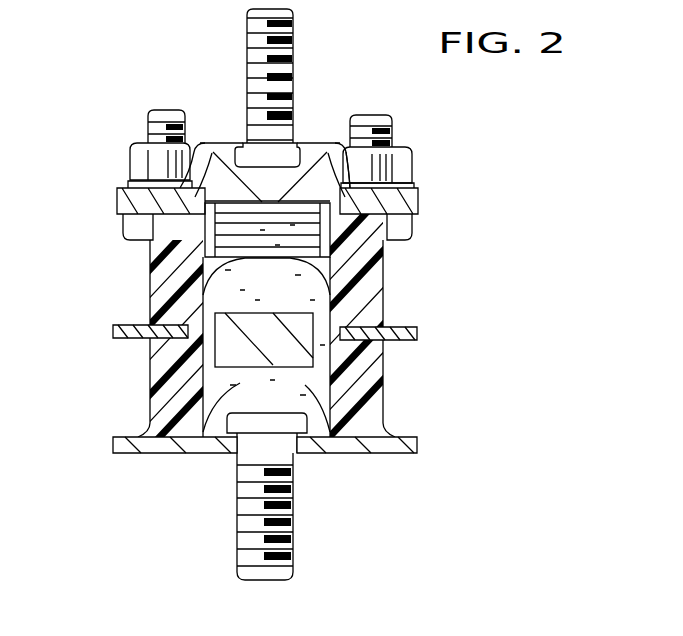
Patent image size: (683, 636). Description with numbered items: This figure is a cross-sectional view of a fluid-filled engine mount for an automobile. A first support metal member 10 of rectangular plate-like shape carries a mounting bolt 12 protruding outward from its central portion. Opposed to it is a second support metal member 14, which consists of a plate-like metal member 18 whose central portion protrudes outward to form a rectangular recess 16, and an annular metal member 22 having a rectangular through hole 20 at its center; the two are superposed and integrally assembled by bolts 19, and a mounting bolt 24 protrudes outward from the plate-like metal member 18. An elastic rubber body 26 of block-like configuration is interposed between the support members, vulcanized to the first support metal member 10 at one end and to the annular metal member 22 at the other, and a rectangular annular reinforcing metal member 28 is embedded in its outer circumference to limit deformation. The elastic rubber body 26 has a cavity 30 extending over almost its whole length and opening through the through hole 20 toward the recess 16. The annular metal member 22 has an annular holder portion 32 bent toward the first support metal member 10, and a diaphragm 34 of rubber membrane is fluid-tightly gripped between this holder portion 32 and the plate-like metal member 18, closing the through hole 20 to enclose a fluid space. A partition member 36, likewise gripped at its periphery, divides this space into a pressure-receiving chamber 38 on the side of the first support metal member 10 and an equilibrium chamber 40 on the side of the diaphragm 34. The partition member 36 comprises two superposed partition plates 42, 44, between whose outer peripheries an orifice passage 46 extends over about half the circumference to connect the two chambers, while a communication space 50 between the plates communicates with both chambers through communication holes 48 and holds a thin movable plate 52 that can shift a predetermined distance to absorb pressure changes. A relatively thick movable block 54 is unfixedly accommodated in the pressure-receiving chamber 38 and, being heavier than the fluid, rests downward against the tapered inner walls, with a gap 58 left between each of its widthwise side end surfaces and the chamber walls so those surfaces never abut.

The first support metal member 10 is at (279, 294).
The mounting bolt 12 is at (243, 545).
The second support metal member 14 is at (322, 132).
The rectangular recess 16 is at (223, 153).
The plate-like metal member 18 is at (303, 140).
The bolts 19 is at (142, 117).
The rectangular through hole 20 is at (152, 263).
The annular metal member 22 is at (413, 208).
The mounting bolt 24 is at (253, 44).
The elastic rubber body 26 is at (148, 407).
The rectangular annular reinforcing metal member 28 is at (413, 338).
The cavity 30 is at (322, 433).
The annular holder portion 32 is at (363, 243).
The diaphragm 34 is at (336, 168).
The partition member 36 is at (345, 306).
The pressure-receiving chamber 38 is at (207, 432).
The equilibrium chamber 40 is at (338, 140).
The partition plate 42 is at (345, 166).
The partition plate 44 is at (286, 266).
The orifice passage 46 is at (340, 262).
The communication holes 48 is at (207, 175).
The communication space 50 is at (228, 170).
The movable plate 52 is at (203, 298).
The movable block 54 is at (153, 437).
The gap 58 is at (172, 367).